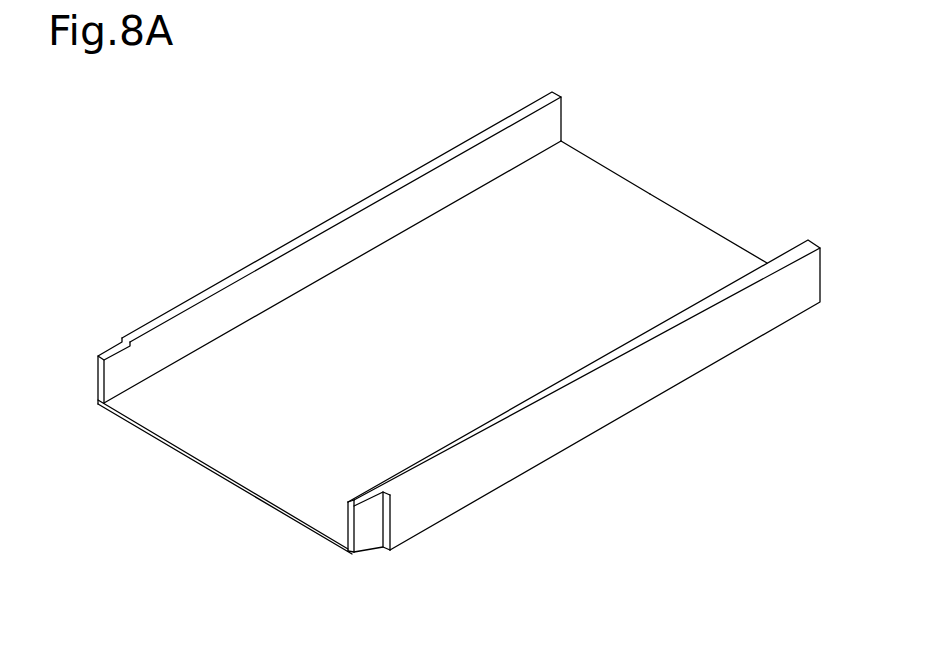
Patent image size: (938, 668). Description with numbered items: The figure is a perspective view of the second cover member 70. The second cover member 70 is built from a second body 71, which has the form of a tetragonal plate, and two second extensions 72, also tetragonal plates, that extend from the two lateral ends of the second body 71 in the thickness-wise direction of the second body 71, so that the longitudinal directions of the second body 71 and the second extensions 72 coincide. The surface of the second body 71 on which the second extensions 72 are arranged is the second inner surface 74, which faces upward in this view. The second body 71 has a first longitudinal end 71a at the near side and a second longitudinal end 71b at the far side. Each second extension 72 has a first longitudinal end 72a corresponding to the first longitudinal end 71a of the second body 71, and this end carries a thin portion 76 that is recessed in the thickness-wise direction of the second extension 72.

The second cover member 70 is at (290, 188).
The second body 71 is at (635, 195).
The first longitudinal end 71a is at (136, 424).
The second longitudinal end 71b is at (607, 163).
The second extension 72 is at (427, 185).
The first longitudinal end 72a is at (98, 383).
The second inner surface 74 is at (673, 215).
The thin portion 76 is at (372, 543).